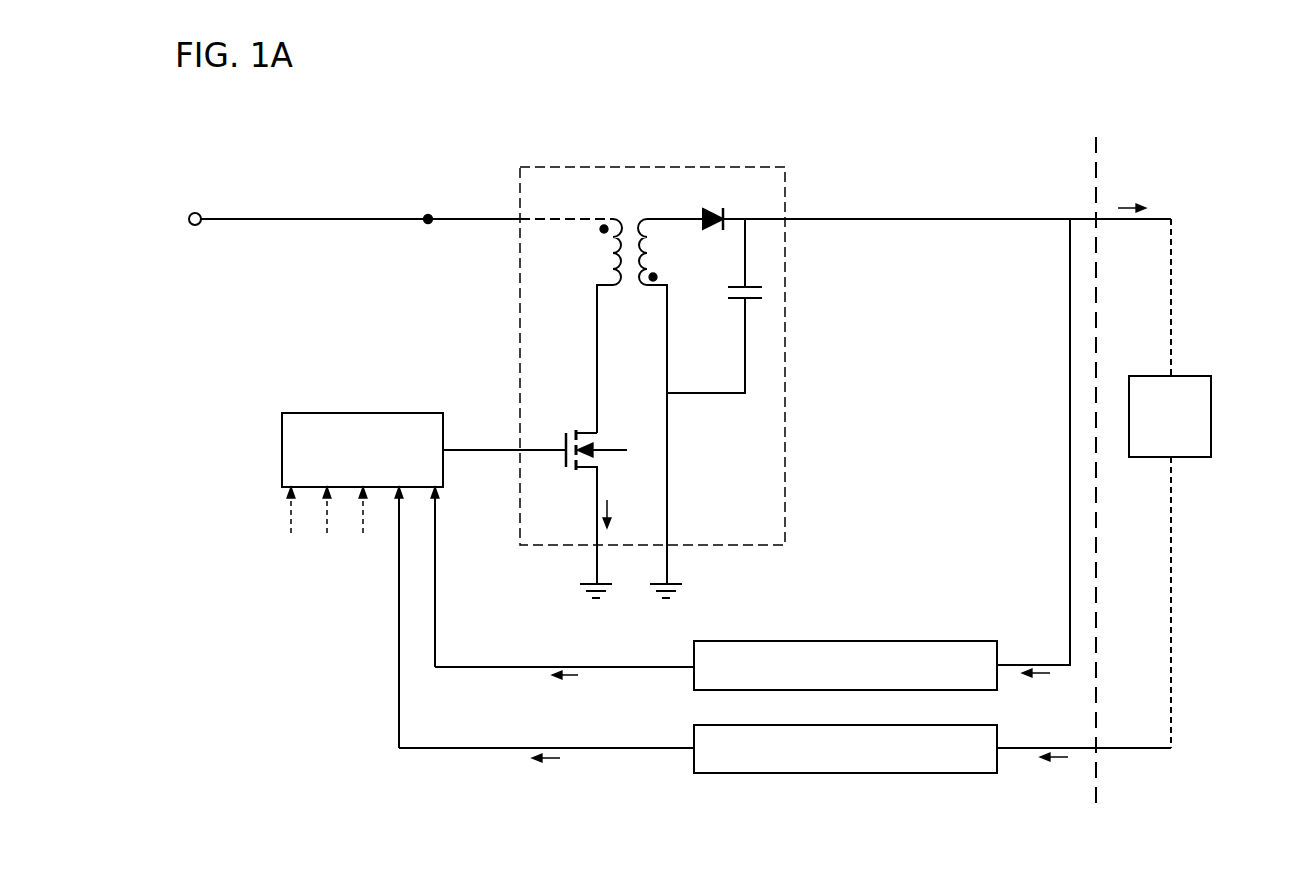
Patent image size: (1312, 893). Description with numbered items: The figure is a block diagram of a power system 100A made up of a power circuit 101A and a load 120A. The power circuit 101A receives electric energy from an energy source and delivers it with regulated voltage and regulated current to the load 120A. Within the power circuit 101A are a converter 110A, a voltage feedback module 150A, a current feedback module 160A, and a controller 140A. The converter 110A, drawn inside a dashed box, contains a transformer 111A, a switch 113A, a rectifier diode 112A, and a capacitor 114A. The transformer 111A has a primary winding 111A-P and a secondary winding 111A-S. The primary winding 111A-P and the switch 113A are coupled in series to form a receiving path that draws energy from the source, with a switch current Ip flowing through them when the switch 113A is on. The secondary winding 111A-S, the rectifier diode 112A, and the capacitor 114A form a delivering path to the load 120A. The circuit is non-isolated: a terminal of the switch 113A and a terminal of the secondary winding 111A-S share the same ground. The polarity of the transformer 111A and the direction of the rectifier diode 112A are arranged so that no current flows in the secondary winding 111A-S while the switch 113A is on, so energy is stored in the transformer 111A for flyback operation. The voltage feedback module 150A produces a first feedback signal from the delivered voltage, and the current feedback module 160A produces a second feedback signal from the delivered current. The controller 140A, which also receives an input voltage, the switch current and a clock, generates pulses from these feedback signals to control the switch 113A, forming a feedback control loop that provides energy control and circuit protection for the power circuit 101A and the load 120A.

The power system 100A is at (1152, 68).
The power circuit 101A is at (913, 180).
The converter 110A is at (786, 333).
The transformer 111A is at (632, 384).
The primary winding 111A-P is at (587, 326).
The secondary winding 111A-S is at (675, 401).
The rectifier diode 112A is at (707, 213).
The switch 113A is at (626, 427).
The capacitor 114A is at (725, 293).
The load 120A is at (1212, 417).
The controller 140A is at (282, 443).
The voltage feedback module 150A is at (935, 641).
The current feedback module 160A is at (944, 774).